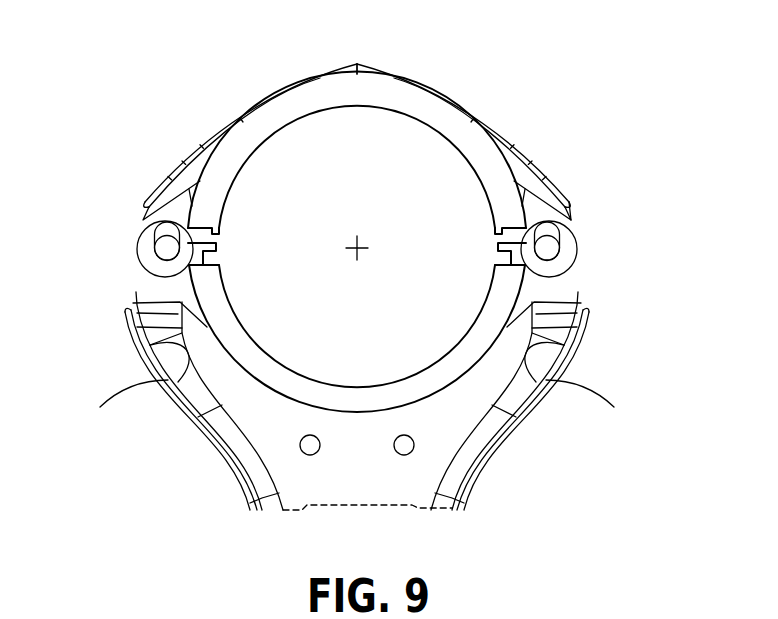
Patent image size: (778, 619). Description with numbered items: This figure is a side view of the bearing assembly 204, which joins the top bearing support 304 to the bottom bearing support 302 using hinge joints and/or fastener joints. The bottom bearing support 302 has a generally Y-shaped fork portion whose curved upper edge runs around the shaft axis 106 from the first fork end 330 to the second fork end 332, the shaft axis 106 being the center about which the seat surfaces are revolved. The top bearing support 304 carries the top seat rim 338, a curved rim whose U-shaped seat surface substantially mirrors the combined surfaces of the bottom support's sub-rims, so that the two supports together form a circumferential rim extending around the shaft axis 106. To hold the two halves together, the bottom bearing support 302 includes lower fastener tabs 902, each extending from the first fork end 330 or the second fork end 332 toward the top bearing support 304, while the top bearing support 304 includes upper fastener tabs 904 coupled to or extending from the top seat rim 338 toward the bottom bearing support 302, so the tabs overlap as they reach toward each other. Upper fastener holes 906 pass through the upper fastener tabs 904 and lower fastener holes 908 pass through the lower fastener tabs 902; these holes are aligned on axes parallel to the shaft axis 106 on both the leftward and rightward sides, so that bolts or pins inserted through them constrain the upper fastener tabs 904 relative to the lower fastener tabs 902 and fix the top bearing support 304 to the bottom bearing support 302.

The shaft axis 106 is at (359, 243).
The bearing assembly 204 is at (612, 69).
The bottom bearing support 302 is at (519, 452).
The top bearing support 304 is at (550, 166).
The first fork end 330 is at (157, 383).
The second fork end 332 is at (519, 342).
The top seat rim 338 is at (570, 202).
The lower fastener tab 902 is at (143, 293).
The upper fastener tab 904 is at (157, 290).
The upper fastener hole 906 is at (155, 230).
The lower fastener hole 908 is at (160, 251).